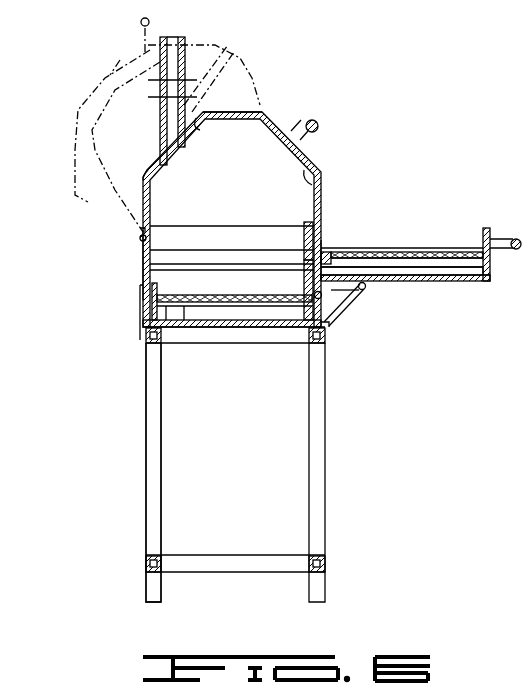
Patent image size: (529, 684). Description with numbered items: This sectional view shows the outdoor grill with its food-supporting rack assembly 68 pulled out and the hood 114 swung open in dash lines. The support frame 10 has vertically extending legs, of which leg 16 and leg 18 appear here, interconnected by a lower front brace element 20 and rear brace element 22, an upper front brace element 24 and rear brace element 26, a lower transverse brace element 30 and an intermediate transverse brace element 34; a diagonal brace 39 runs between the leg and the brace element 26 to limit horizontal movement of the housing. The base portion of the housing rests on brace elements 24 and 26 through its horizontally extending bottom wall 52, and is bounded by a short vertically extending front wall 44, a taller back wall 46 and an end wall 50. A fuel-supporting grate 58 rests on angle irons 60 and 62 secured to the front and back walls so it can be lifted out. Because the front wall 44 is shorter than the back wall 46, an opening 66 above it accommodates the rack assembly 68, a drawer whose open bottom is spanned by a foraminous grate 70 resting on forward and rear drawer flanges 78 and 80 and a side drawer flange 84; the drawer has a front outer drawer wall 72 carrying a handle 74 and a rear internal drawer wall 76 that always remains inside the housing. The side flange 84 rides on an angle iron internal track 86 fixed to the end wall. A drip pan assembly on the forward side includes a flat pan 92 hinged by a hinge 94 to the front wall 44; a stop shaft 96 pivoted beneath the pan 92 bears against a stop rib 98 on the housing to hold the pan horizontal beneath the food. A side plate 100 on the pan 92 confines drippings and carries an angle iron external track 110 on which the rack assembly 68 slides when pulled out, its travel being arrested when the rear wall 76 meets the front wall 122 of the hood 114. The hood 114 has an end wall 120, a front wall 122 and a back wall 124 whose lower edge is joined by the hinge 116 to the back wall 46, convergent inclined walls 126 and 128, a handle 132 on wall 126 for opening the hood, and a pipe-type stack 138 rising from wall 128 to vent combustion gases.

The support frame 10 is at (134, 463).
The leg 16 is at (148, 405).
The leg 18 is at (324, 498).
The front brace element 20 is at (326, 563).
The rear brace element 22 is at (146, 564).
The front brace element 24 is at (310, 343).
The rear brace element 26 is at (148, 344).
The transverse front-to-rear brace element 30 is at (192, 574).
The front-to-rear transverse brace element 34 is at (252, 346).
The diagonal brace 39 is at (140, 307).
The front wall 44 is at (312, 292).
The back wall 46 is at (143, 256).
The end wall 50 is at (232, 248).
The bottom wall 52 is at (213, 328).
The fuel-supporting grate 58 is at (186, 312).
The angle iron 60 is at (157, 288).
The angle iron 62 is at (314, 292).
The opening 66 is at (322, 235).
The food-supporting grate assembly 68 is at (401, 241).
The foraminous grate 70 is at (446, 266).
The front outer drawer plate 72 is at (486, 228).
The handle 74 is at (514, 250).
The rear internal drawer plate 76 is at (305, 238).
The forward drawer flange 78 is at (476, 282).
The rear drawer flange 80 is at (328, 250).
The side drawer flange 84 is at (445, 280).
The internal track 86 is at (170, 295).
The flat pan 92 is at (486, 280).
The hinge 94 is at (333, 312).
The stop shaft 96 is at (350, 298).
The stop rib 98 is at (323, 335).
The side plate 100 is at (366, 266).
The external track 110 is at (417, 253).
The hood 114 is at (95, 91).
The hinge 116 is at (143, 238).
The end wall 120 is at (232, 219).
The front wall 122 is at (322, 170).
The back wall 124 is at (148, 170).
The inclined wall 126 is at (262, 110).
The inclined wall 128 is at (196, 118).
The handle 132 is at (140, 30).
The stack 138 is at (172, 45).